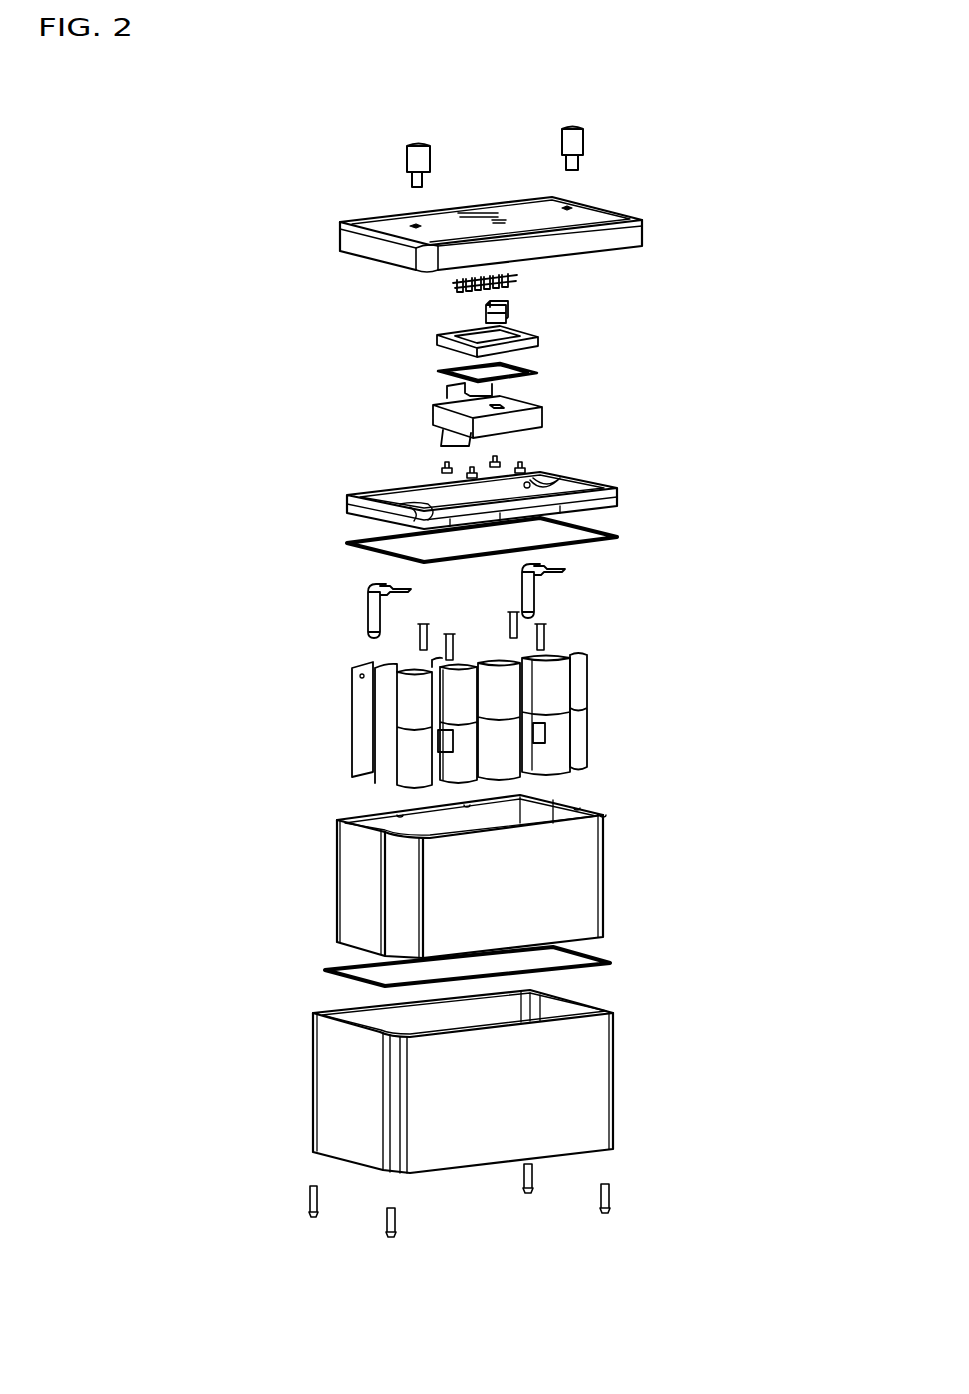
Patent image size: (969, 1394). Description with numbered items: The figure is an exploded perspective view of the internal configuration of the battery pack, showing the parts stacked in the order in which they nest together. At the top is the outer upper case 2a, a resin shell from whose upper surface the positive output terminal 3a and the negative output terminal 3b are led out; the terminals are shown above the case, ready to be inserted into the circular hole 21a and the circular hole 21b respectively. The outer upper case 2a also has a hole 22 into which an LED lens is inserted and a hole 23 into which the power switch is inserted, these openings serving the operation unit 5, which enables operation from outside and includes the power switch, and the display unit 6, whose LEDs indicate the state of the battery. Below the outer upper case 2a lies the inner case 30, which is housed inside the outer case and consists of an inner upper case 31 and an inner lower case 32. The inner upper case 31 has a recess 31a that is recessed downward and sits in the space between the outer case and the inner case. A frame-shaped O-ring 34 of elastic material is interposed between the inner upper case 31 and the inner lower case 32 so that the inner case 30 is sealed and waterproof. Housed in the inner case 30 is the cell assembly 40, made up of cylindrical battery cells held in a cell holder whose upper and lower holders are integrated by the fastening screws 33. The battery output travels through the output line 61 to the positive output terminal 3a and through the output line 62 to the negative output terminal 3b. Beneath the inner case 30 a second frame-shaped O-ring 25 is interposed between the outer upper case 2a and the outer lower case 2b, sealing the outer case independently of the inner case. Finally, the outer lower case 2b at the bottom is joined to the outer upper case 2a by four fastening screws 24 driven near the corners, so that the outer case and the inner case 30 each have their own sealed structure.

The outer upper case 2a is at (520, 210).
The outer lower case 2b is at (611, 1072).
The positive output terminal 3a is at (418, 143).
The negative output terminal 3b is at (571, 128).
The operation unit 5 is at (323, 250).
The display unit 6 is at (487, 360).
The circular hole 21a is at (415, 227).
The circular hole 21b is at (567, 208).
The hole 22 is at (472, 210).
The hole 23 is at (506, 219).
The fastening screws 24 is at (300, 1200).
The O-ring 25 is at (607, 961).
The inner case 30 is at (680, 498).
The inner upper case 31 is at (519, 492).
The recess 31a is at (575, 489).
The inner lower case 32 is at (607, 829).
The fastening screws 33 is at (566, 628).
The O-ring 34 is at (617, 540).
The cell assembly 40 is at (342, 720).
The output line 61 is at (367, 602).
The output line 62 is at (536, 596).